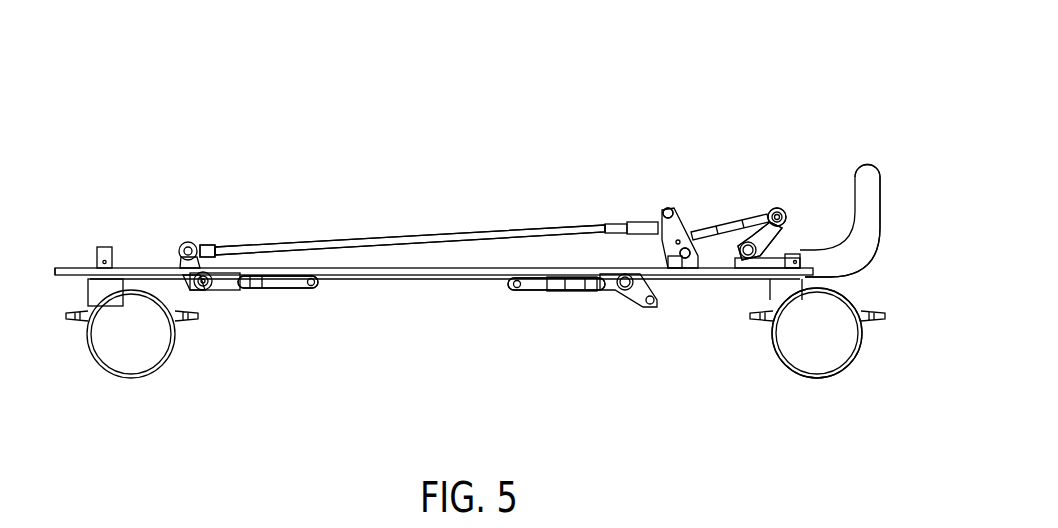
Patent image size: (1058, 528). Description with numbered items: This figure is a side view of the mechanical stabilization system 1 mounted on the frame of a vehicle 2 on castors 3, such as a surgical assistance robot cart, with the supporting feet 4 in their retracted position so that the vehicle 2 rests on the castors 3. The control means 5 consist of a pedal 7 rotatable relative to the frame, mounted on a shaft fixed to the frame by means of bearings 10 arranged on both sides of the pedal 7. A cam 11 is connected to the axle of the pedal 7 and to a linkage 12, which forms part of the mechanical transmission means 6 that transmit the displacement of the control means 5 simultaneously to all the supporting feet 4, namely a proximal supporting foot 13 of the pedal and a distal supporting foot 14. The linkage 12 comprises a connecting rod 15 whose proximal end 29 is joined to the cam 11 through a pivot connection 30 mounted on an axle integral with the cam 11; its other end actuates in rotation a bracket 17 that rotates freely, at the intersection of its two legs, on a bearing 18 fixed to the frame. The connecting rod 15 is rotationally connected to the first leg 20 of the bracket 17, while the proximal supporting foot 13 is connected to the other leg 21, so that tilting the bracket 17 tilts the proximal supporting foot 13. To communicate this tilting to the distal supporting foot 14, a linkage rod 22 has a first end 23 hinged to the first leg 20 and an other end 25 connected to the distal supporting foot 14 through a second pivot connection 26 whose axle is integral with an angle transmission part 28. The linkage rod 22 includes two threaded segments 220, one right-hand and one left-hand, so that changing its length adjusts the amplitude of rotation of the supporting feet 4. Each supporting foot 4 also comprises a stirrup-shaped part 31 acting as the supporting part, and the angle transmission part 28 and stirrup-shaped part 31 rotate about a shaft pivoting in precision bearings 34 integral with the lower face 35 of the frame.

The mechanical stabilization system 1 is at (890, 340).
The vehicle 2 is at (60, 267).
The castors 3 is at (129, 366).
The supporting feet 4 is at (334, 308).
The control means 5 is at (900, 183).
The mechanical transmission means 6 is at (815, 224).
The pedal 7 is at (872, 168).
The bearings 10 is at (728, 270).
The cam 11 is at (798, 252).
The linkage 12 is at (705, 106).
The proximal supporting foot 13 is at (553, 279).
The distal supporting foot 14 is at (241, 289).
The connecting rod 15 is at (733, 235).
The bracket 17 is at (671, 262).
The bearing 18 is at (691, 268).
The first leg 20 is at (674, 207).
The other leg 21 is at (668, 256).
The linkage rod 22 is at (348, 240).
The first end 23 is at (664, 210).
The other end 25 is at (216, 245).
The second pivot connection 26 is at (185, 244).
The angle transmission part 28 is at (640, 296).
The proximal end 29 is at (778, 208).
The pivot connection 30 is at (785, 212).
The stirrup-shaped part 31 is at (283, 290).
The precision bearings 34 is at (188, 280).
The lower face 35 is at (60, 300).
The segments 220 is at (207, 224).